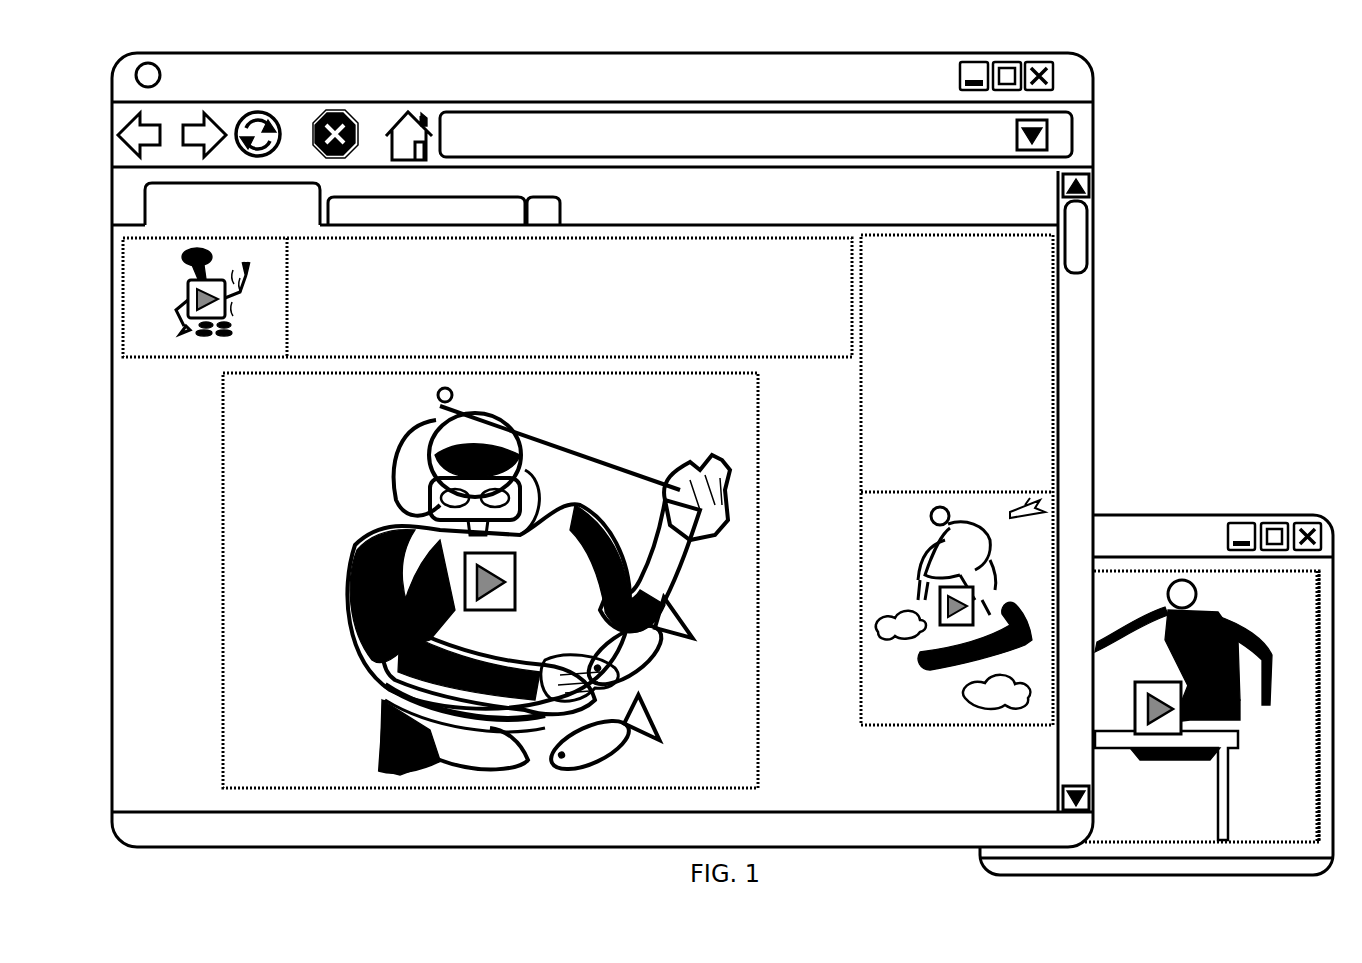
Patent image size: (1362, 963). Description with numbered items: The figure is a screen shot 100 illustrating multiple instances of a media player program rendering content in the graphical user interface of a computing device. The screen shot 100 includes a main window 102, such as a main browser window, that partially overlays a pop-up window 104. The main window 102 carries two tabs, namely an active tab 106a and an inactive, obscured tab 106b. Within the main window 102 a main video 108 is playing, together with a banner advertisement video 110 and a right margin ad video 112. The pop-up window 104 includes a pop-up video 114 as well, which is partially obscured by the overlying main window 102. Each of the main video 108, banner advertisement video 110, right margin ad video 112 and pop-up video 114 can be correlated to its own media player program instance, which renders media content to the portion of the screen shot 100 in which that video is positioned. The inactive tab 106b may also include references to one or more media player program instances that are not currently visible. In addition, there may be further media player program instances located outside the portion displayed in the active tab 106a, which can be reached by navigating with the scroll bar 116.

The screen shot 100 is at (1238, 118).
The main window 102 is at (940, 90).
The pop-up window 104 is at (1210, 548).
The active tab 106a is at (336, 198).
The inactive tab 106b is at (521, 198).
The main video 108 is at (740, 777).
The banner advertisement video 110 is at (278, 347).
The right margin ad video 112 is at (905, 712).
The pop-up video 114 is at (1307, 829).
The scroll bar 116 is at (1095, 230).